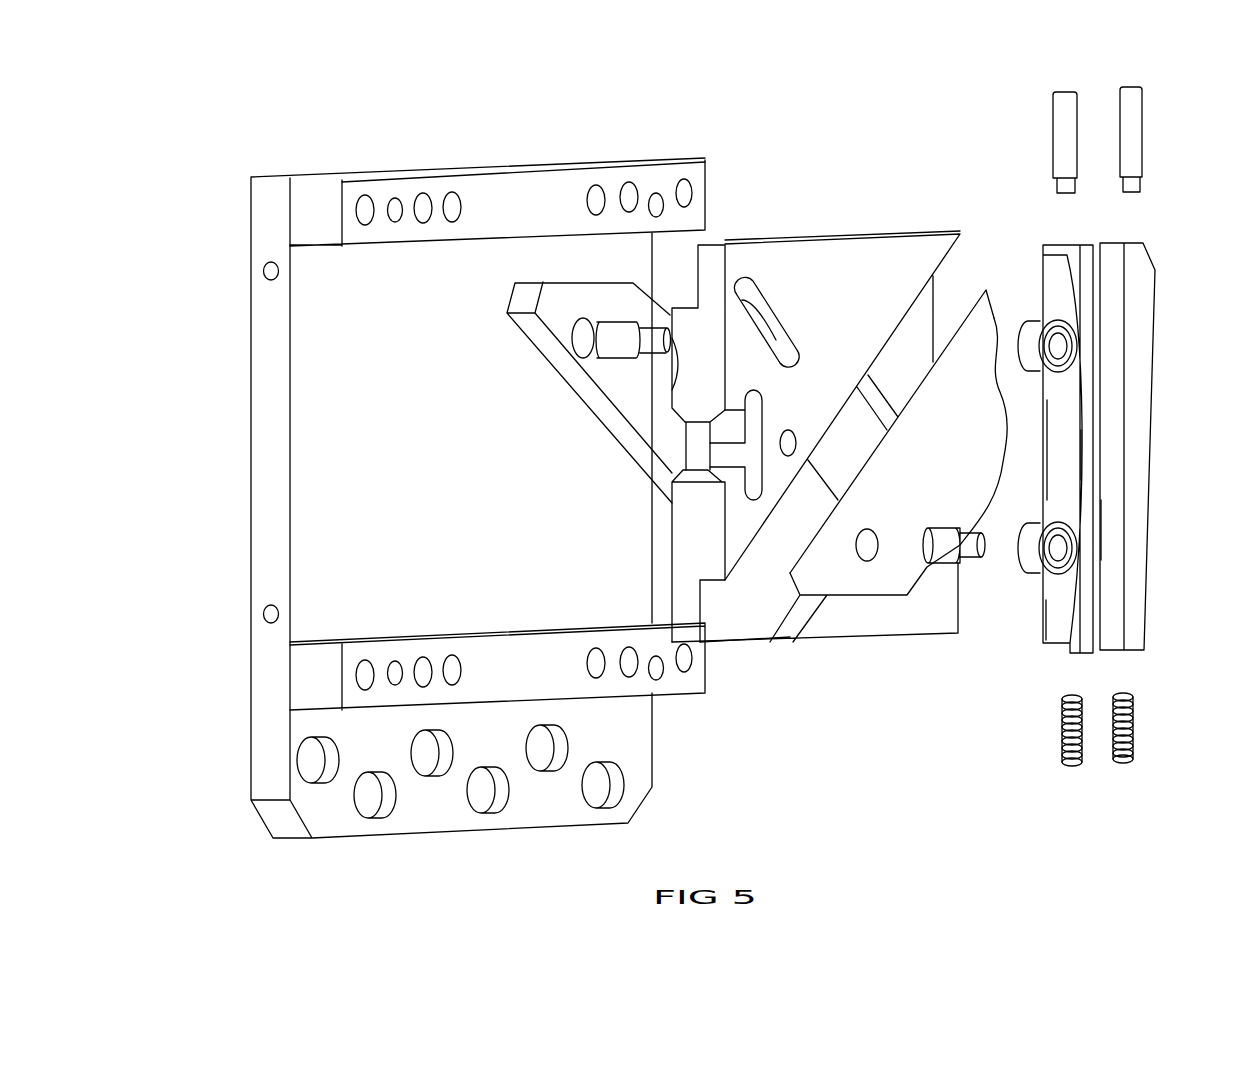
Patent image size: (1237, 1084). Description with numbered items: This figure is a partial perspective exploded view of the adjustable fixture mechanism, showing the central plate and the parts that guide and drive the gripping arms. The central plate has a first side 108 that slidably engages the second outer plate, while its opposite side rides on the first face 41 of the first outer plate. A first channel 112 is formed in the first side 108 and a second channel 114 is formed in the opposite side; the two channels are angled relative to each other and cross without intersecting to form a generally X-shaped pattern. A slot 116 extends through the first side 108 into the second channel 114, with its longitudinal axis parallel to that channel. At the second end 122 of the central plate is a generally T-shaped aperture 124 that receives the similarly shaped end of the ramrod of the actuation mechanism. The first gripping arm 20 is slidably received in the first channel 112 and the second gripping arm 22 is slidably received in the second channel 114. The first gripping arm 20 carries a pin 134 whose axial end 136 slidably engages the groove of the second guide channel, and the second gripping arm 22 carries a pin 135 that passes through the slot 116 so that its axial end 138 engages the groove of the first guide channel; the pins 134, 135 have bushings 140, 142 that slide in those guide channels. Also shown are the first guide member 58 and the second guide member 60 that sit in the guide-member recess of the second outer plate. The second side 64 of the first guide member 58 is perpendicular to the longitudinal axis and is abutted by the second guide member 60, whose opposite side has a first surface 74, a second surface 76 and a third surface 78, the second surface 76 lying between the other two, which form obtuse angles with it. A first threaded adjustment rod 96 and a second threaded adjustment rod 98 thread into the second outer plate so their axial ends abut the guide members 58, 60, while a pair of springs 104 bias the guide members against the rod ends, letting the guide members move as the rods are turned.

The first face 41 is at (305, 448).
The second gripping arm 22 is at (647, 483).
The pin 135 is at (622, 355).
The axial end 138 is at (668, 393).
The second channel 114 is at (685, 308).
The T-shaped aperture 124 is at (748, 443).
The second end 122 is at (697, 543).
The first side 108 is at (860, 258).
The slot 116 is at (742, 282).
The first gripping arm 20 is at (857, 587).
The first channel 112 is at (742, 630).
The pin 134 is at (947, 557).
The axial end 136 is at (984, 552).
The bushing 142 is at (1040, 330).
The bushing 140 is at (1042, 523).
The first surface 74 is at (1055, 272).
The second surface 76 is at (1060, 435).
The third surface 78 is at (1055, 620).
The first guide member 58 is at (1147, 307).
The second guide member 60 is at (1087, 455).
The second side 64 is at (1114, 514).
The second threaded adjustment rod 98 is at (1062, 147).
The first threaded adjustment rod 96 is at (1137, 128).
The springs 104 is at (1070, 763).